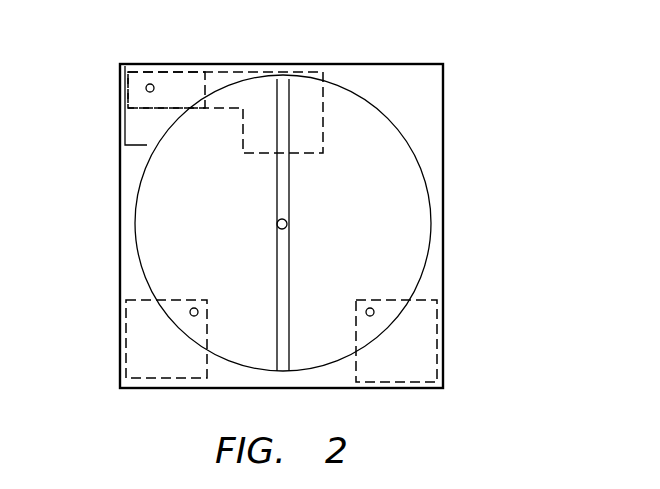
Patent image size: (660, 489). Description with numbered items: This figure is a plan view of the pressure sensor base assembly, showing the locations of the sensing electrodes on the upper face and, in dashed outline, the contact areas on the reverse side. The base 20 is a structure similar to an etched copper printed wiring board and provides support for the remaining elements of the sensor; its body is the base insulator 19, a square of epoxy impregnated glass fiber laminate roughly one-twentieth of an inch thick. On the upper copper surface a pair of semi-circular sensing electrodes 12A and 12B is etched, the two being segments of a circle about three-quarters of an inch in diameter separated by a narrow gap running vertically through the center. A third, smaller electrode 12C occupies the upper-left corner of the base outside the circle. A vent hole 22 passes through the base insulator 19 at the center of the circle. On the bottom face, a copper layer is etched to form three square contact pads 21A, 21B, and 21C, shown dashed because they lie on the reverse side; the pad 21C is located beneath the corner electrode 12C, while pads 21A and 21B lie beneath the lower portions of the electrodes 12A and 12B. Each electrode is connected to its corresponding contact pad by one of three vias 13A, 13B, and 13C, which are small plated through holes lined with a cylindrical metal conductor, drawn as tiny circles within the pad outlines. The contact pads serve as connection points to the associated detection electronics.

The base insulator 19 is at (435, 152).
The base 20 is at (472, 126).
The sensing electrode 12A is at (405, 205).
The sensing electrode 12B is at (158, 225).
The third electrode 12C is at (143, 135).
The via 13A is at (373, 309).
The via 13B is at (230, 281).
The via 13C is at (150, 84).
The contact pad 21A is at (427, 308).
The contact pad 21B is at (117, 318).
The contact pad 21C is at (317, 72).
The vent hole 22 is at (284, 218).